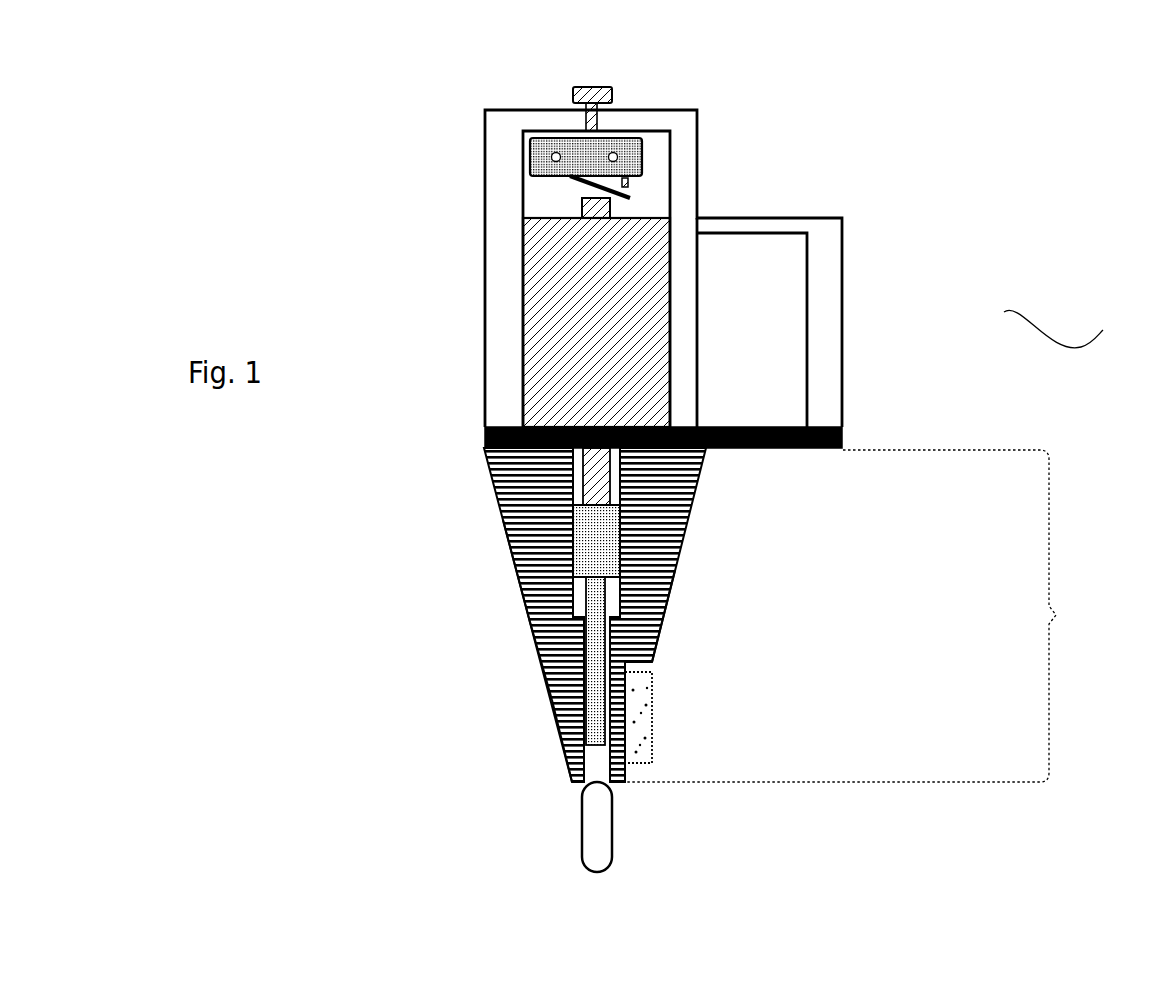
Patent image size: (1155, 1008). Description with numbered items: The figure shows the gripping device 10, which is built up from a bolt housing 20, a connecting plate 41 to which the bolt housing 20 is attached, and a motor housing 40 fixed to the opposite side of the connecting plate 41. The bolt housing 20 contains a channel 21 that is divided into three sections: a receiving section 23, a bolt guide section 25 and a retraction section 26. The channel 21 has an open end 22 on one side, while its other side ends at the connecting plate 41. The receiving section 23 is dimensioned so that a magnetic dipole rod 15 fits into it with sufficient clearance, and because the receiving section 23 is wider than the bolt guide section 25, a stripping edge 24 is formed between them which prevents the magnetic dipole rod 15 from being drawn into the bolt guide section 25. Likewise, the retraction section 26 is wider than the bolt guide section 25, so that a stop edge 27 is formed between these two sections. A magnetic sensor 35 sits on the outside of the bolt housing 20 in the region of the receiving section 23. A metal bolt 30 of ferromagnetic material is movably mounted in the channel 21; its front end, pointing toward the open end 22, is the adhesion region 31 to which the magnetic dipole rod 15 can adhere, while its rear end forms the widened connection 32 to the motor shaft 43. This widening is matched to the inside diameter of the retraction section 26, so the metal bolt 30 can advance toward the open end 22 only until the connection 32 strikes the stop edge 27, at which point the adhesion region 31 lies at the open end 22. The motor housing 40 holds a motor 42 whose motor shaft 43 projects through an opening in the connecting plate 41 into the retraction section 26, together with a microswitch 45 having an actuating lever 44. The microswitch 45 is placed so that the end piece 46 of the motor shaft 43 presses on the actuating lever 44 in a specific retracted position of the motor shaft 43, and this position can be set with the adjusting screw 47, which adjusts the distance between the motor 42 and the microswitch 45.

The gripping device 10 is at (1075, 319).
The magnetic dipole rod 15 is at (600, 843).
The bolt housing 20 is at (640, 553).
The channel 21 is at (1056, 615).
The open end 22 is at (603, 777).
The receiving section 23 is at (568, 735).
The stripping edge 24 is at (547, 678).
The bolt guide section 25 is at (657, 662).
The retraction section 26 is at (667, 625).
The stop edge 27 is at (525, 598).
The metal bolt 30 is at (538, 645).
The adhesion region 31 is at (573, 767).
The connection 32 is at (525, 532).
The magnetic sensor 35 is at (652, 713).
The motor housing 40 is at (670, 127).
The connecting plate 41 is at (787, 452).
The motor 42 is at (560, 278).
The motor shaft 43 is at (615, 492).
The actuating lever 44 is at (630, 200).
The microswitch 45 is at (530, 135).
The end piece 46 is at (580, 200).
The adjusting screw 47 is at (578, 90).